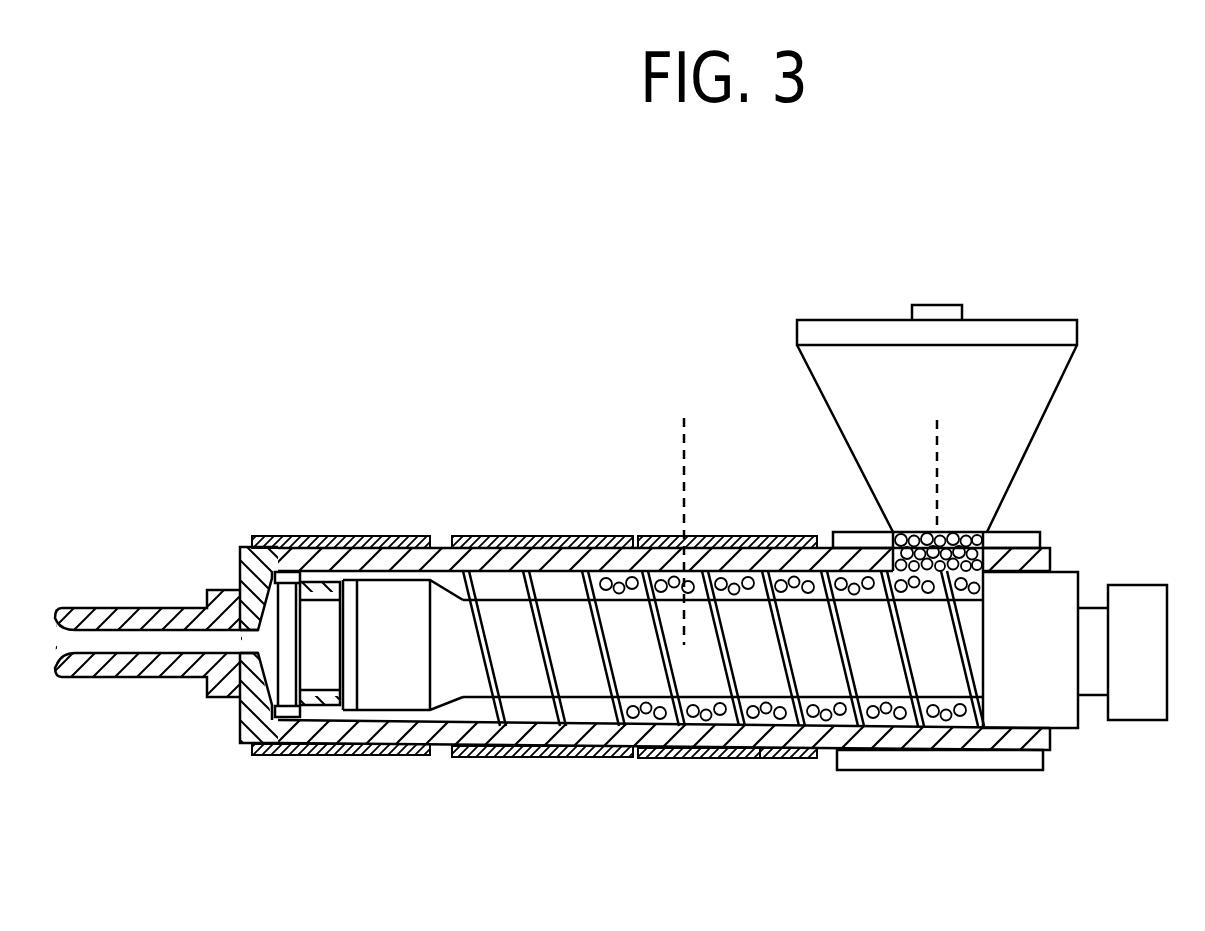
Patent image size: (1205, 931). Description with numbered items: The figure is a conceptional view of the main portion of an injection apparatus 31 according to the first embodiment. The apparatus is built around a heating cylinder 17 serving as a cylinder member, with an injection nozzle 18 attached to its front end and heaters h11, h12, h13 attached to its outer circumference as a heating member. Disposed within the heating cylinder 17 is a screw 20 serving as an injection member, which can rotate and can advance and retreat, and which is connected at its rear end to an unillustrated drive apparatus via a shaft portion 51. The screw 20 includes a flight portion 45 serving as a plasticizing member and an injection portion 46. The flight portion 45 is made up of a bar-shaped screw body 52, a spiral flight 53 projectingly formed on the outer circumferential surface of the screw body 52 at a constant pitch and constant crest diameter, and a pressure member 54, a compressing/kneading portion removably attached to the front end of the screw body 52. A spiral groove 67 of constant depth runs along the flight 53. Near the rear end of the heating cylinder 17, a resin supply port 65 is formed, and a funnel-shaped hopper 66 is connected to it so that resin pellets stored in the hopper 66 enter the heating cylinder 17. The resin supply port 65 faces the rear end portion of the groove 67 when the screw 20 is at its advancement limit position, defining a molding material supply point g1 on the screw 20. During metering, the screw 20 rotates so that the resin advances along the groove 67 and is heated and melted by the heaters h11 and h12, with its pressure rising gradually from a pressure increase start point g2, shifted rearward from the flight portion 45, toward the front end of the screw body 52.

The injection apparatus 31 is at (728, 335).
The injection nozzle 18 is at (147, 607).
The heating cylinder 17 is at (525, 735).
The heater h11 is at (287, 535).
The heater h12 is at (500, 535).
The heater h13 is at (740, 535).
The flight 53 is at (735, 762).
The groove 67 is at (772, 760).
The injection portion 46 is at (310, 717).
The pressure member 54 is at (405, 712).
The flight portion 45 is at (592, 710).
The screw 20 is at (557, 590).
The screw body 52 is at (830, 690).
The resin supply port 65 is at (985, 533).
The hopper 66 is at (1007, 320).
The shaft portion 51 is at (1093, 700).
The molding material supply point g1 is at (936, 447).
The pressure increase start point g2 is at (683, 507).